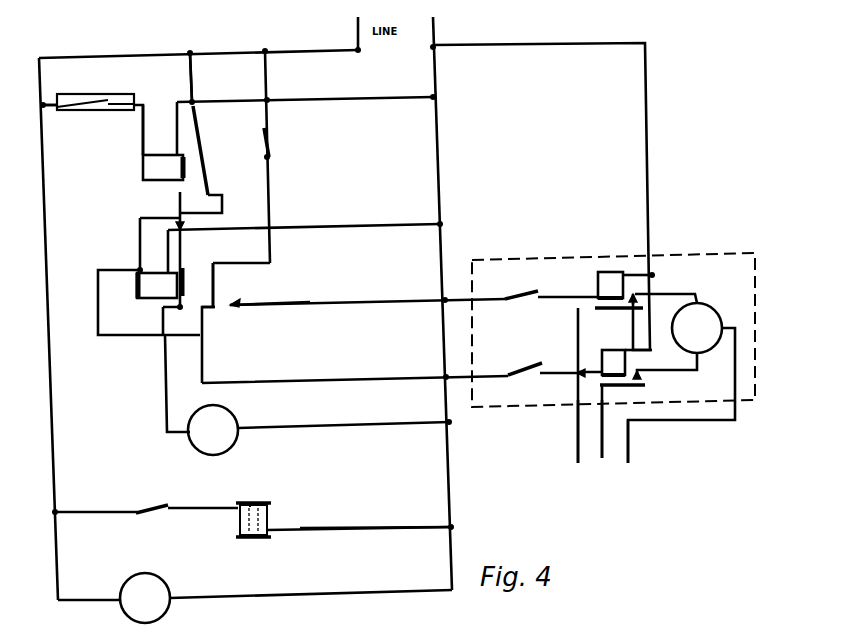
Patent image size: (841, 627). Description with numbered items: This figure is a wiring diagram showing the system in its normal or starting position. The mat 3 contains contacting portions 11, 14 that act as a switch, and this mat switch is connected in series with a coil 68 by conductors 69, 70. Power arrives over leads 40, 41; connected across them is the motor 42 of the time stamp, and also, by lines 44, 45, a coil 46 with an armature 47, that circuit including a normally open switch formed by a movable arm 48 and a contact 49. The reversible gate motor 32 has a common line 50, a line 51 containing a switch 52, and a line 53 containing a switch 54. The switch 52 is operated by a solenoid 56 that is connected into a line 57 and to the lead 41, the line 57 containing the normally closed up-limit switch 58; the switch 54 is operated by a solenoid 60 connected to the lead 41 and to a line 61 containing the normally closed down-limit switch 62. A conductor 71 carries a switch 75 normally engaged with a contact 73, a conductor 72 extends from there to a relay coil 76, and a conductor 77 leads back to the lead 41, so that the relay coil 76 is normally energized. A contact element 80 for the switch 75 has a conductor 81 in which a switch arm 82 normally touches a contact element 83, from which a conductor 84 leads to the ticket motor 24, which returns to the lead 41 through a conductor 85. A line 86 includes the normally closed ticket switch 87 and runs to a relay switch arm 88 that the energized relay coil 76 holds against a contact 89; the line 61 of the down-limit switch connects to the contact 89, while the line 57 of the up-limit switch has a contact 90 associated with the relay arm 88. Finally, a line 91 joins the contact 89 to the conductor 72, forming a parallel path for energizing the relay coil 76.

The mat 3 is at (106, 96).
The contacting portion 11 is at (110, 118).
The contacting portion 14 is at (100, 95).
The ticket motor 24 is at (230, 414).
The gate motor 32 is at (703, 306).
The power line lead 40 is at (356, 28).
The power line lead 41 is at (436, 32).
The time stamp motor 42 is at (156, 590).
The line 44 is at (95, 512).
The line 45 is at (337, 540).
The coil 46 is at (238, 522).
The armature 47 is at (258, 503).
The movable arm 48 is at (154, 508).
The contact 49 is at (165, 518).
The common line 50 is at (630, 452).
The line 51 is at (577, 444).
The switch 52 is at (607, 312).
The line 53 is at (605, 464).
The switch 54 is at (640, 387).
The solenoid 56 is at (610, 272).
The line 57 is at (330, 308).
The up-limit switch 58 is at (520, 296).
The solenoid 60 is at (612, 350).
The line 61 is at (352, 382).
The down-limit switch 62 is at (520, 366).
The coil 68 is at (152, 173).
The conductor 69 is at (141, 136).
The conductor 70 is at (330, 97).
The conductor 71 is at (193, 92).
The conductor 72 is at (140, 236).
The contact 73 is at (215, 193).
The switch 75 is at (204, 162).
The relay coil 76 is at (152, 294).
The conductor 77 is at (320, 224).
The contact element 80 is at (180, 194).
The conductor 81 is at (181, 248).
The switch arm 82 is at (185, 278).
The contact element 83 is at (177, 321).
The conductor 84 is at (165, 382).
The conductor 85 is at (334, 430).
The line 86 is at (268, 72).
The ticket switch 87 is at (270, 156).
The relay switch arm 88 is at (216, 284).
The contact 89 is at (209, 310).
The contact 90 is at (240, 303).
The line 91 is at (130, 338).